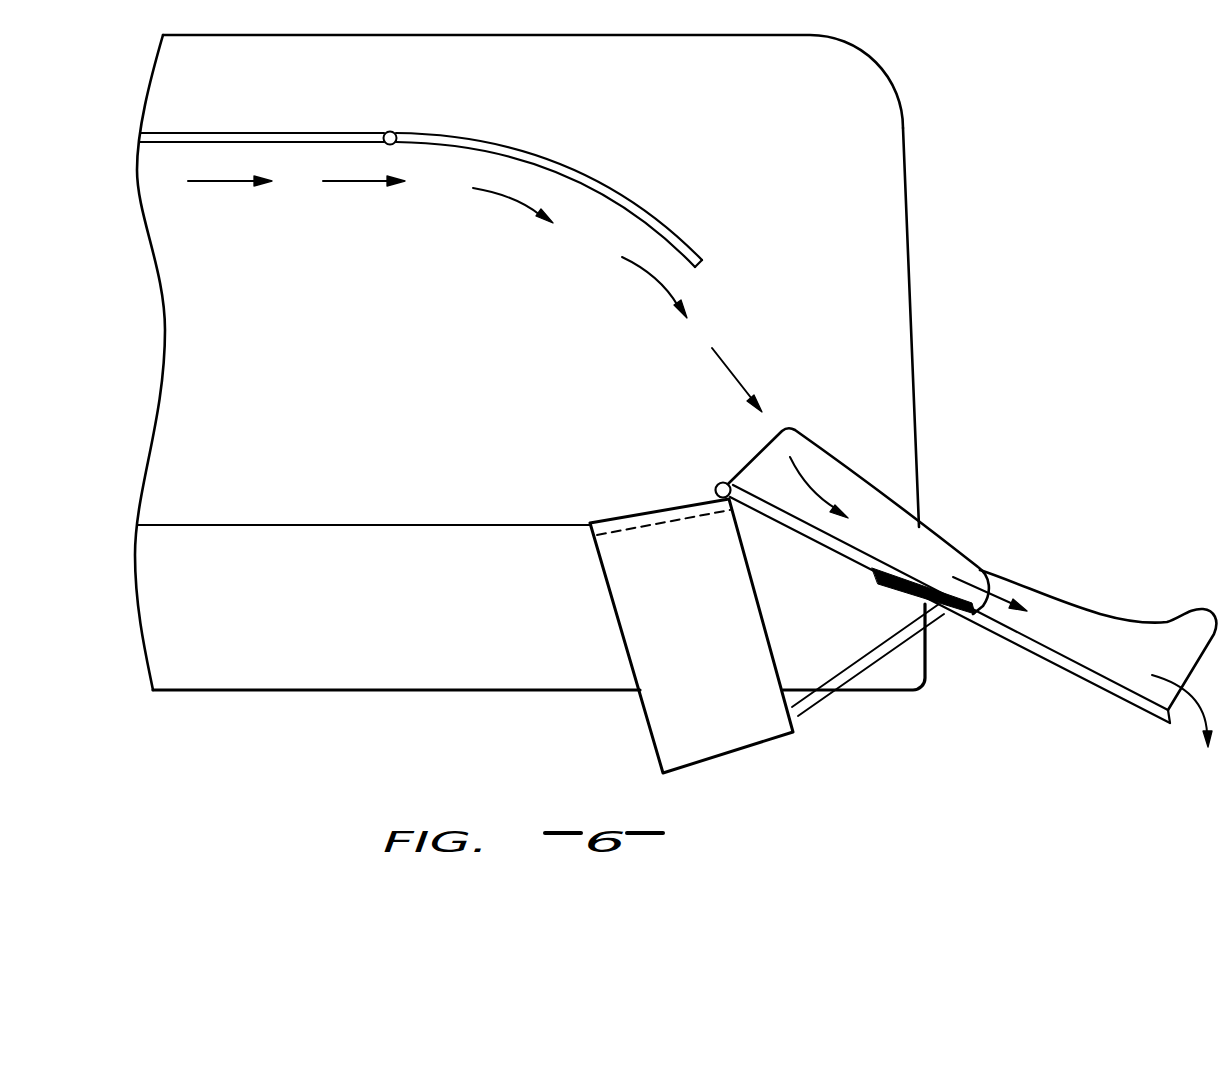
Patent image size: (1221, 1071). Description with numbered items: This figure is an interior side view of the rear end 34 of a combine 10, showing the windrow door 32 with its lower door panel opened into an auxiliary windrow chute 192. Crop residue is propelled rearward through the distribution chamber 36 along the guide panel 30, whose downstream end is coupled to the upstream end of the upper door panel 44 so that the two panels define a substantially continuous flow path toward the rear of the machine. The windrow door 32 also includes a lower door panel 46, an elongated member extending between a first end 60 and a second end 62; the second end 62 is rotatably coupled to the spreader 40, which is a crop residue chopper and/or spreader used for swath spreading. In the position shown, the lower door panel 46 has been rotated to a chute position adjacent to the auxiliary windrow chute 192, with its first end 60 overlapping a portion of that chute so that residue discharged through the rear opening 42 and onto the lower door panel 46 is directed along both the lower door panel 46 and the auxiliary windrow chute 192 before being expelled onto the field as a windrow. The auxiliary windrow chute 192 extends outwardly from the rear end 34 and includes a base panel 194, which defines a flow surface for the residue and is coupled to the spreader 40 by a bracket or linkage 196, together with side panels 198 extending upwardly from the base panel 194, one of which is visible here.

The combine 10 is at (597, 362).
The guide panel 30 is at (308, 131).
The windrow door 32 is at (782, 284).
The rear end 34 is at (912, 278).
The distribution chamber 36 is at (351, 387).
The spreader 40 is at (712, 651).
The rear opening 42 is at (700, 333).
The upper door panel 44 is at (647, 198).
The lower door panel 46 is at (807, 537).
The first end 60 is at (931, 588).
The second end 62 is at (740, 492).
The auxiliary windrow chute 192 is at (999, 643).
The base panel 194 is at (1085, 682).
The linkage 196 is at (863, 672).
The side panel 198 is at (1145, 638).